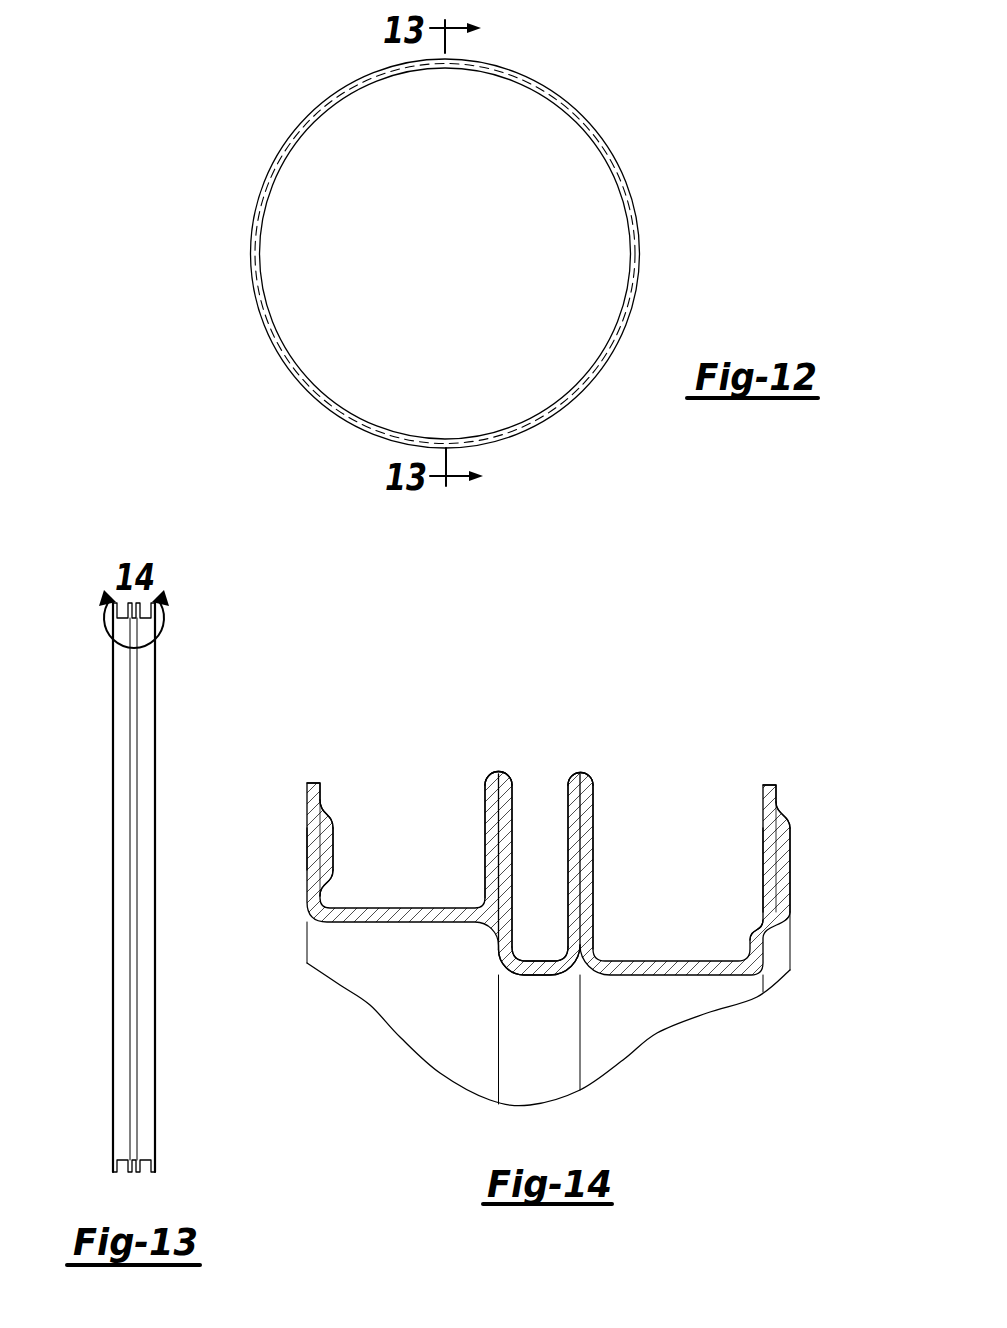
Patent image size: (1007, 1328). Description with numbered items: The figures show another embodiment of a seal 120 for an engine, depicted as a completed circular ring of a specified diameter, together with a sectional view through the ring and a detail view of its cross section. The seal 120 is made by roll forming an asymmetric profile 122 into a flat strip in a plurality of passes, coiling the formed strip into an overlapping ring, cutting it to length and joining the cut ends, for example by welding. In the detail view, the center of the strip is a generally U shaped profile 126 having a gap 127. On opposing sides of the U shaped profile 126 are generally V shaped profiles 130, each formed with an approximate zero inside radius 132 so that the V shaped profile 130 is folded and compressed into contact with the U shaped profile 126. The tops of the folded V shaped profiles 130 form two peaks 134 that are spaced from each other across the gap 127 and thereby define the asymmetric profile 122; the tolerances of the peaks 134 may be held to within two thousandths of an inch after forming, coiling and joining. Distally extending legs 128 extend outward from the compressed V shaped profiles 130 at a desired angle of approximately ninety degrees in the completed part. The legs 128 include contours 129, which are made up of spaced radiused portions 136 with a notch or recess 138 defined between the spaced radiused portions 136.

In FIG. 12, the seal 120 is at (633, 140).
In FIG. 13, the seal 120 is at (113, 812).
In FIG. 14, the seal 120 is at (390, 1027).
In FIG. 13, the asymmetric profile 122 is at (185, 558).
In FIG. 14, the asymmetric profile 122 is at (632, 714).
In FIG. 14, the U shaped profile 126 is at (540, 977).
In FIG. 14, the gap 127 is at (538, 836).
In FIG. 14, the distally extending legs 128 is at (307, 795).
In FIG. 14, the contours 129 is at (323, 853).
In FIG. 14, the V shaped profiles 130 is at (485, 848).
In FIG. 14, the zero inside radius 132 is at (497, 770).
In FIG. 14, the peaks 134 is at (511, 760).
In FIG. 14, the spaced radiused portions 136 is at (320, 812).
In FIG. 14, the notch or recess 138 is at (333, 850).